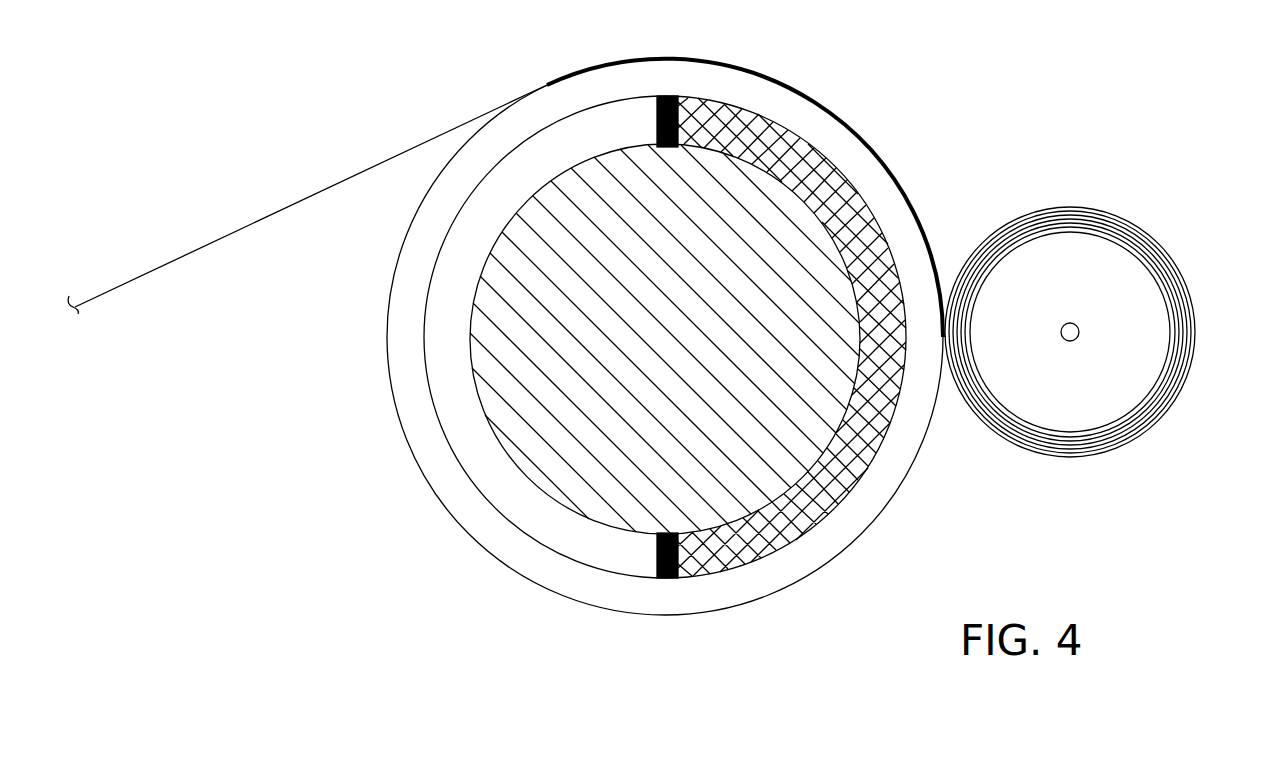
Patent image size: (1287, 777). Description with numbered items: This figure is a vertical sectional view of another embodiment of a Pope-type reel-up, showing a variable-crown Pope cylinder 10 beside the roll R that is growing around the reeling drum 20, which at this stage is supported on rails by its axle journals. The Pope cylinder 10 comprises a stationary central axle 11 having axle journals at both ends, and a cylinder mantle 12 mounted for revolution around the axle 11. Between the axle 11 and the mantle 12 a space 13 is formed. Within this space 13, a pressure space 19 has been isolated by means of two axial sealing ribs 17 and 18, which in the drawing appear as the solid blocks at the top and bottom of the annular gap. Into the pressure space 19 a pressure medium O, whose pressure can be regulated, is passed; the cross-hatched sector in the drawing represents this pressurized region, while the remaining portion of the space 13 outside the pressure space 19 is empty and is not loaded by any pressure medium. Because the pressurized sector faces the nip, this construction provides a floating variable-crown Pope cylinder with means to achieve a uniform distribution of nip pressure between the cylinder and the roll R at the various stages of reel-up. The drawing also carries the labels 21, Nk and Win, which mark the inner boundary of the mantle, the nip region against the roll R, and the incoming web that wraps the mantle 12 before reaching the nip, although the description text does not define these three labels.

The variable-crown Pope cylinder 10 is at (498, 381).
The stationary central axle 11 is at (479, 327).
The cylinder mantle 12 is at (398, 318).
The space 13 is at (610, 558).
The axial sealing rib 17 is at (668, 96).
The axial sealing rib 18 is at (672, 578).
The pressure space 19 is at (862, 436).
The reeling drum 20 is at (1135, 382).
The inner ring 21 is at (436, 272).
The roll R is at (1183, 350).
The nip Nk is at (948, 336).
The pressure medium O is at (793, 152).
The incoming web Win is at (364, 172).